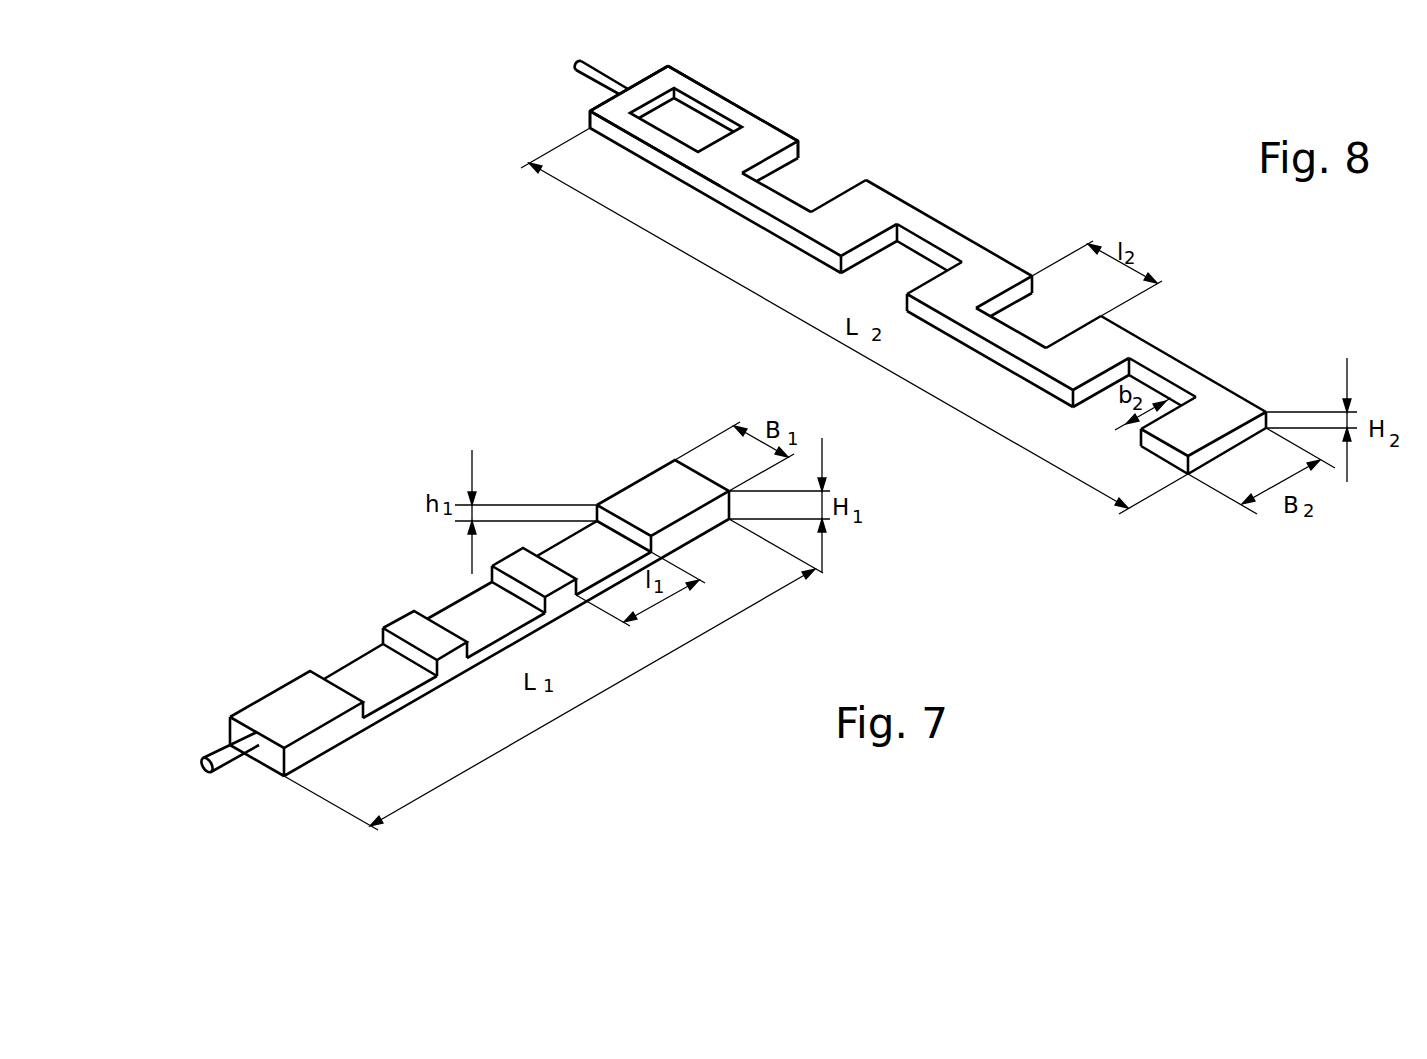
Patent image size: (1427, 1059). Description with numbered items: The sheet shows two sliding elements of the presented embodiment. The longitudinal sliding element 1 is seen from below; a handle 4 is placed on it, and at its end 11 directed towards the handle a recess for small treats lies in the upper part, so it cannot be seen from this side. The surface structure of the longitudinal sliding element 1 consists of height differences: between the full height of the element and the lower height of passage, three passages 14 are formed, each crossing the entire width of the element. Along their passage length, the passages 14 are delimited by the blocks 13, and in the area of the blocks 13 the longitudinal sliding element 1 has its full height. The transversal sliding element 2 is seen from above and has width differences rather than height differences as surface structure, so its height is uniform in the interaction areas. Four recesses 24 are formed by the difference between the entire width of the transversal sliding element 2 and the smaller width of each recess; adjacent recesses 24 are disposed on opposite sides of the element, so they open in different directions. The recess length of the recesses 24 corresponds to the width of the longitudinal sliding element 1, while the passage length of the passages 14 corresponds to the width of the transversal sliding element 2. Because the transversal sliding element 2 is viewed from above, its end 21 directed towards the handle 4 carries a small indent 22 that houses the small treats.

In FIG. 7, the longitudinal sliding element 1 is at (270, 547).
In FIG. 8, the transversal sliding element 2 is at (1022, 137).
In FIG. 8, the handle 4 is at (595, 72).
In FIG. 7, the handle 4 is at (203, 767).
In FIG. 7, the end 11 is at (293, 710).
In FIG. 7, the blocks 13 is at (413, 628).
In FIG. 7, the passages 14 is at (367, 677).
In FIG. 8, the end 21 is at (648, 93).
In FIG. 8, the indent 22 is at (692, 123).
In FIG. 8, the recesses 24 is at (810, 180).